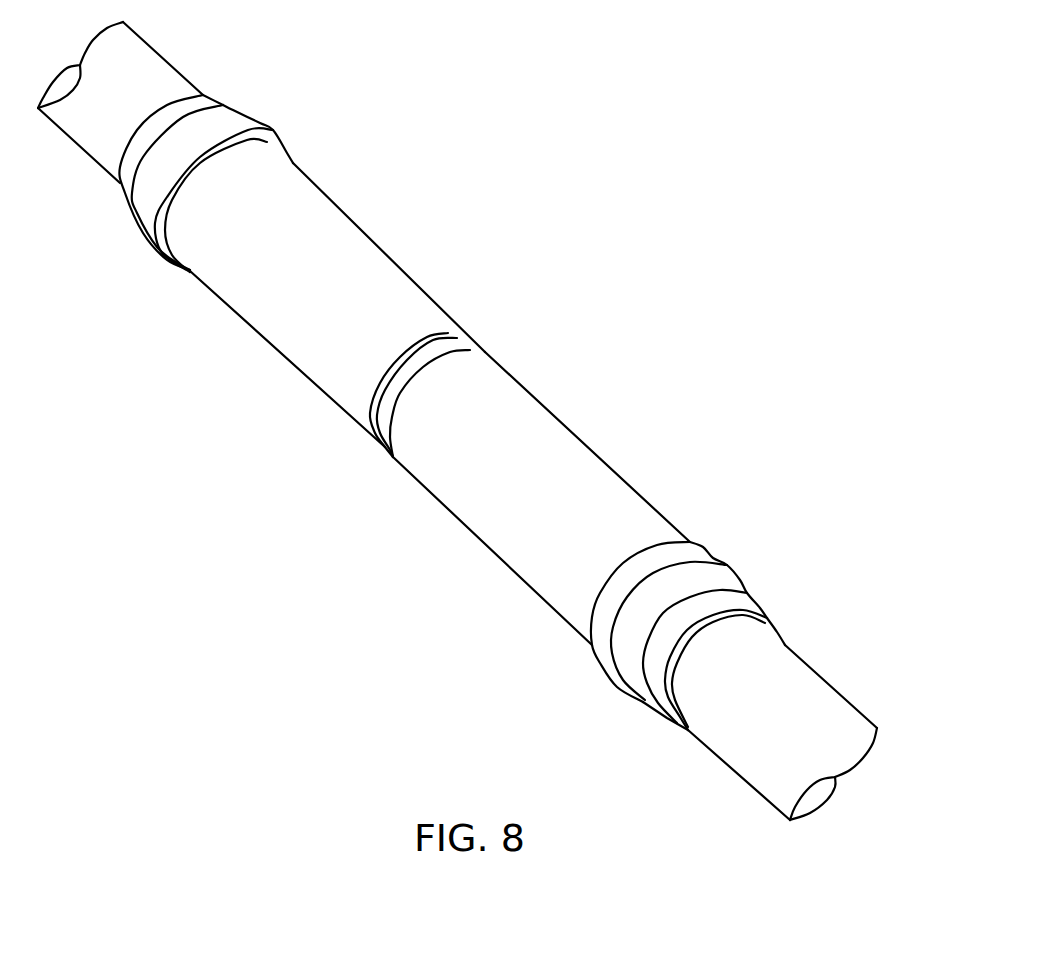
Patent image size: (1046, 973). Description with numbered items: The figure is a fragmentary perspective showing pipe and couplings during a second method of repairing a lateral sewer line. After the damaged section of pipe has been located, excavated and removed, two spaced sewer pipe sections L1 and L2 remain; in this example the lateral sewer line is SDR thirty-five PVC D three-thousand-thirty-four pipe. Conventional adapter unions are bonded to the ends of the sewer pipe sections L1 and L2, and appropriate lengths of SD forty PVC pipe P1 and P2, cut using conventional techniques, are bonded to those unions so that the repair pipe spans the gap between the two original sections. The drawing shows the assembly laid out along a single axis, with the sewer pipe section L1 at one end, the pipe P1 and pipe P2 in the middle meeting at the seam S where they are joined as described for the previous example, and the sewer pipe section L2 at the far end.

The sewer pipe section L1 is at (163, 57).
The SD 40 PVC pipe P1 is at (377, 245).
The seam S is at (499, 341).
The SD 40 PVC pipe P2 is at (585, 440).
The sewer pipe section L2 is at (823, 675).